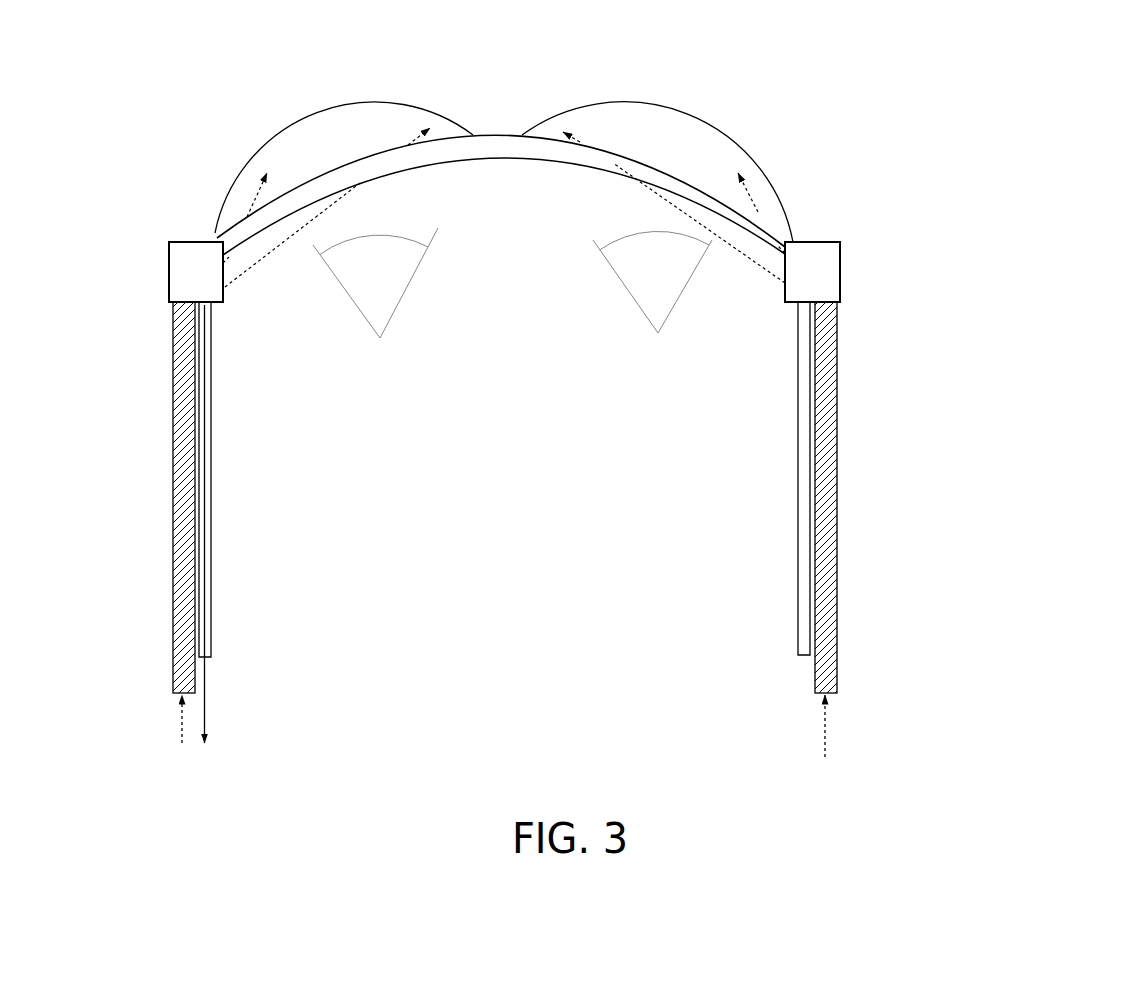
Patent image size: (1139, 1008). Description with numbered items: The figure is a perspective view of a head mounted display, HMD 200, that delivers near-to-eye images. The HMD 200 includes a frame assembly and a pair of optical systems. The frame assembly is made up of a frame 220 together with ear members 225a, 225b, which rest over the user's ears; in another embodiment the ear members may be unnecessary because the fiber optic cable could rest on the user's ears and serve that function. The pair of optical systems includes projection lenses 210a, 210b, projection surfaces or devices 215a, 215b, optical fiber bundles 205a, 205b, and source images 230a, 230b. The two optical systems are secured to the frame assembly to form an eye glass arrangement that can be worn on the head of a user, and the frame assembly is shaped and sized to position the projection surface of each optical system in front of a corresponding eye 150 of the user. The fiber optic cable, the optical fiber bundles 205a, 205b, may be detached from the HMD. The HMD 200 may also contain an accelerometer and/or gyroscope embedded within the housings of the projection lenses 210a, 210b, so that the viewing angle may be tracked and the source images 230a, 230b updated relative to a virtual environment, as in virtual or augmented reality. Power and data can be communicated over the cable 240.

The HMD 200 is at (580, 422).
The optical fiber bundle 205a is at (155, 382).
The optical fiber bundle 205b is at (847, 440).
The projection lens 210a is at (158, 268).
The projection lens 210b is at (848, 260).
The projection surface 215a is at (270, 127).
The projection surface 215b is at (772, 140).
The frame 220 is at (497, 131).
The ear member 225a is at (217, 488).
The ear member 225b is at (792, 483).
The source image 230a is at (170, 720).
The source image 230b is at (830, 730).
The cable 240 is at (210, 707).
The eye 150 is at (397, 288).